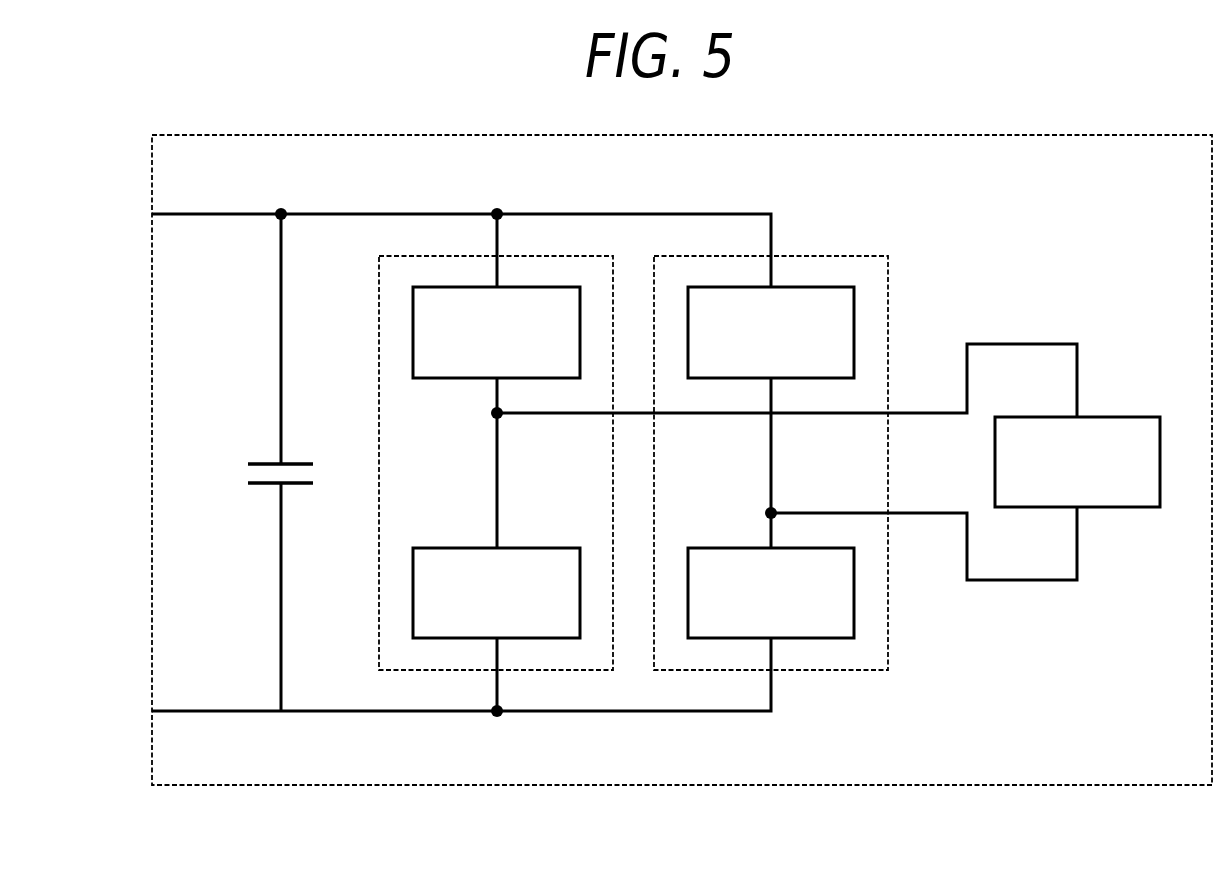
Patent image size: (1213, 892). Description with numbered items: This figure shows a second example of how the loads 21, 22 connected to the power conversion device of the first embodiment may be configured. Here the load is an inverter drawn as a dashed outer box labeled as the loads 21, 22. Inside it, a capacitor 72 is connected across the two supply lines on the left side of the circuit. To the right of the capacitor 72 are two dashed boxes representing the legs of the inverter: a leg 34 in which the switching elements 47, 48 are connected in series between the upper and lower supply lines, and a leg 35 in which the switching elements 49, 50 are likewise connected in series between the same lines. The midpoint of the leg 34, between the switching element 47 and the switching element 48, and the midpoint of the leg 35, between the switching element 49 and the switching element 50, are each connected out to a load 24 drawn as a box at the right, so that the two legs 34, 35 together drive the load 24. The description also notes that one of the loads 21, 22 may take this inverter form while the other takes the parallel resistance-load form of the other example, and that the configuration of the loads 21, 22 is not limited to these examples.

The load 21 is at (682, 438).
The load 22 is at (993, 135).
The load 24 is at (1047, 416).
The leg 34 is at (427, 257).
The leg 35 is at (826, 254).
The switching element 47 is at (460, 378).
The switching element 48 is at (461, 548).
The switching element 49 is at (855, 322).
The switching element 50 is at (735, 548).
The capacitor 72 is at (258, 474).